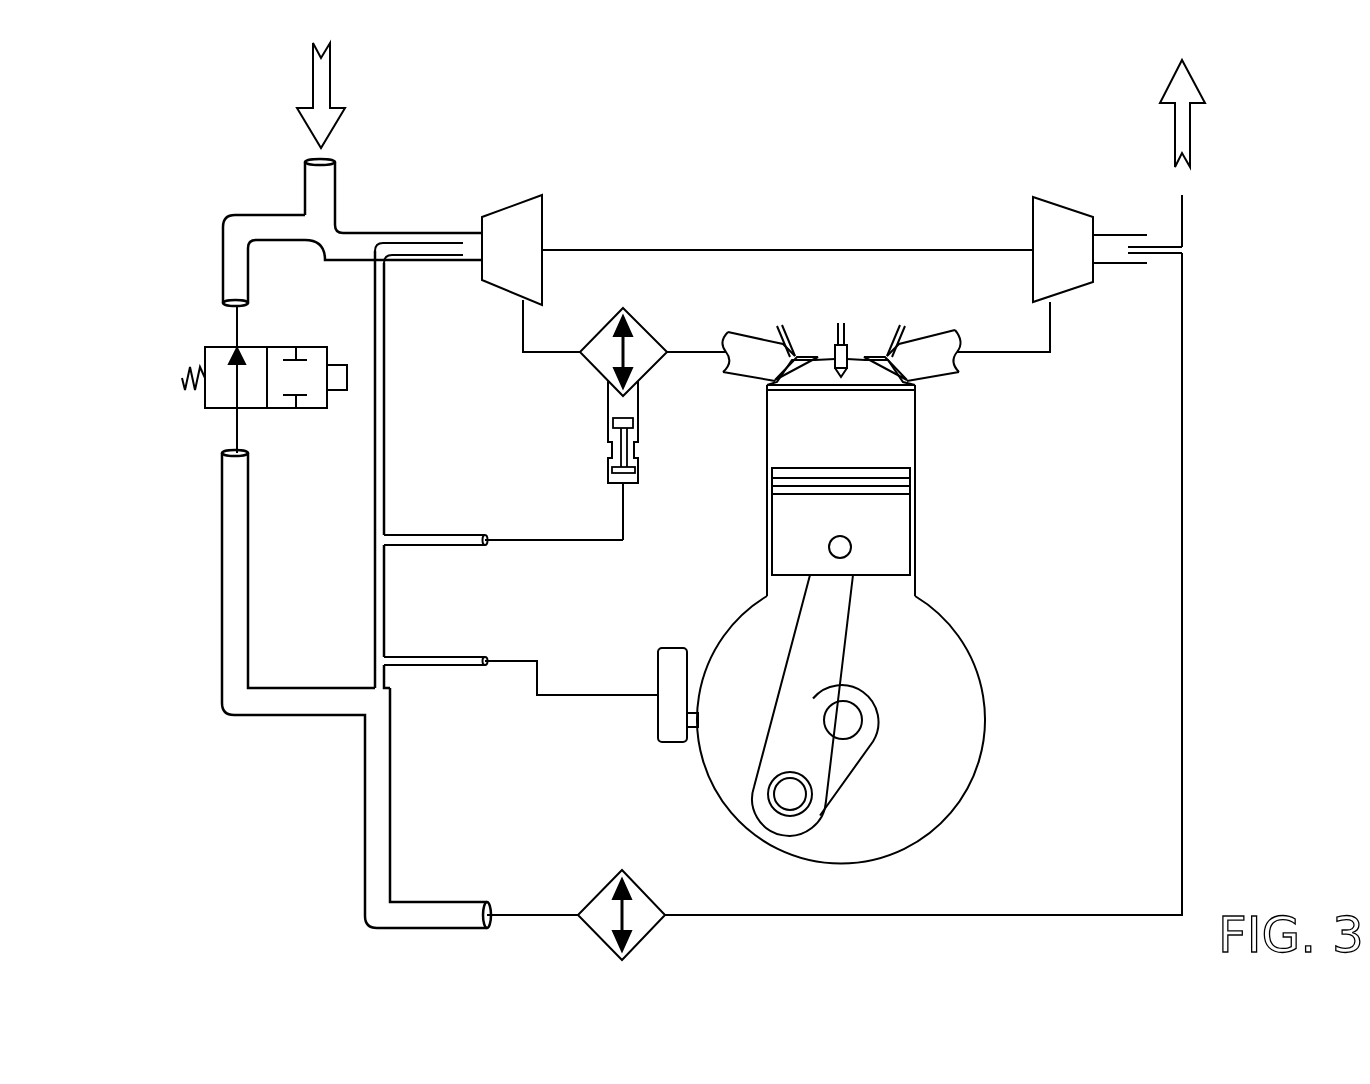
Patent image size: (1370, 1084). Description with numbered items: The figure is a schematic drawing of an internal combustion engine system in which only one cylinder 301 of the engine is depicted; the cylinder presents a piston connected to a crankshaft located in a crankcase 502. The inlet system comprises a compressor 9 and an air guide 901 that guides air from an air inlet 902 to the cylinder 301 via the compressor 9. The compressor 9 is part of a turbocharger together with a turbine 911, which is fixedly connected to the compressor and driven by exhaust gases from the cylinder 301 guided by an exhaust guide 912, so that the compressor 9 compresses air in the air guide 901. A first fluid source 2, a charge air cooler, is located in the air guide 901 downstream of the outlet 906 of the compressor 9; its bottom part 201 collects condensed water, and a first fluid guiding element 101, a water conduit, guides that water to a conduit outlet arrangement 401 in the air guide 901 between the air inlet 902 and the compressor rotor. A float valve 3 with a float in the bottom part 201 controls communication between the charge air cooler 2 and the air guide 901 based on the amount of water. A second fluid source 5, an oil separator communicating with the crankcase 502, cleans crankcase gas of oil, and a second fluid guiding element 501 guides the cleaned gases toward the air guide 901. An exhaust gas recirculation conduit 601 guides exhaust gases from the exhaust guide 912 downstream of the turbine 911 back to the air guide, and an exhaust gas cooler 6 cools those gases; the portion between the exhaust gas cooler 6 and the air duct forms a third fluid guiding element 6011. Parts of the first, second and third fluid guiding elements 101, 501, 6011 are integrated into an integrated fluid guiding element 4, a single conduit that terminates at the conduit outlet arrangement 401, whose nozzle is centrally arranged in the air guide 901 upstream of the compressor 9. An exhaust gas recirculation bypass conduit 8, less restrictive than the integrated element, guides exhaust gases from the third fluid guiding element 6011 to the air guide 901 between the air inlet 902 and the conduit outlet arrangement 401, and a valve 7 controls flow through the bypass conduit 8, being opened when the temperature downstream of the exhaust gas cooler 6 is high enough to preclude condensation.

The first fluid source 2 is at (652, 332).
The valve 3 is at (621, 455).
The integrated fluid guiding element 4 is at (385, 350).
The second fluid source 5 is at (658, 672).
The exhaust gas cooler 6 is at (597, 897).
The valve 7 is at (205, 352).
The exhaust gas recirculation bypass conduit 8 is at (235, 263).
The compressor 9 is at (525, 197).
The first fluid guiding element 101 is at (555, 545).
The bottom part 201 is at (608, 413).
The cylinder 301 is at (915, 490).
The conduit outlet arrangement 401 is at (465, 247).
The second fluid guiding element 501 is at (598, 697).
The crankcase 502 is at (968, 645).
The exhaust gas recirculation conduit 601 is at (1072, 913).
The air guide 901 is at (407, 233).
The air inlet 902 is at (310, 163).
The outlet 906 is at (520, 298).
The turbine 911 is at (1068, 205).
The exhaust guide 912 is at (1010, 353).
The third fluid guiding element 6011 is at (392, 742).